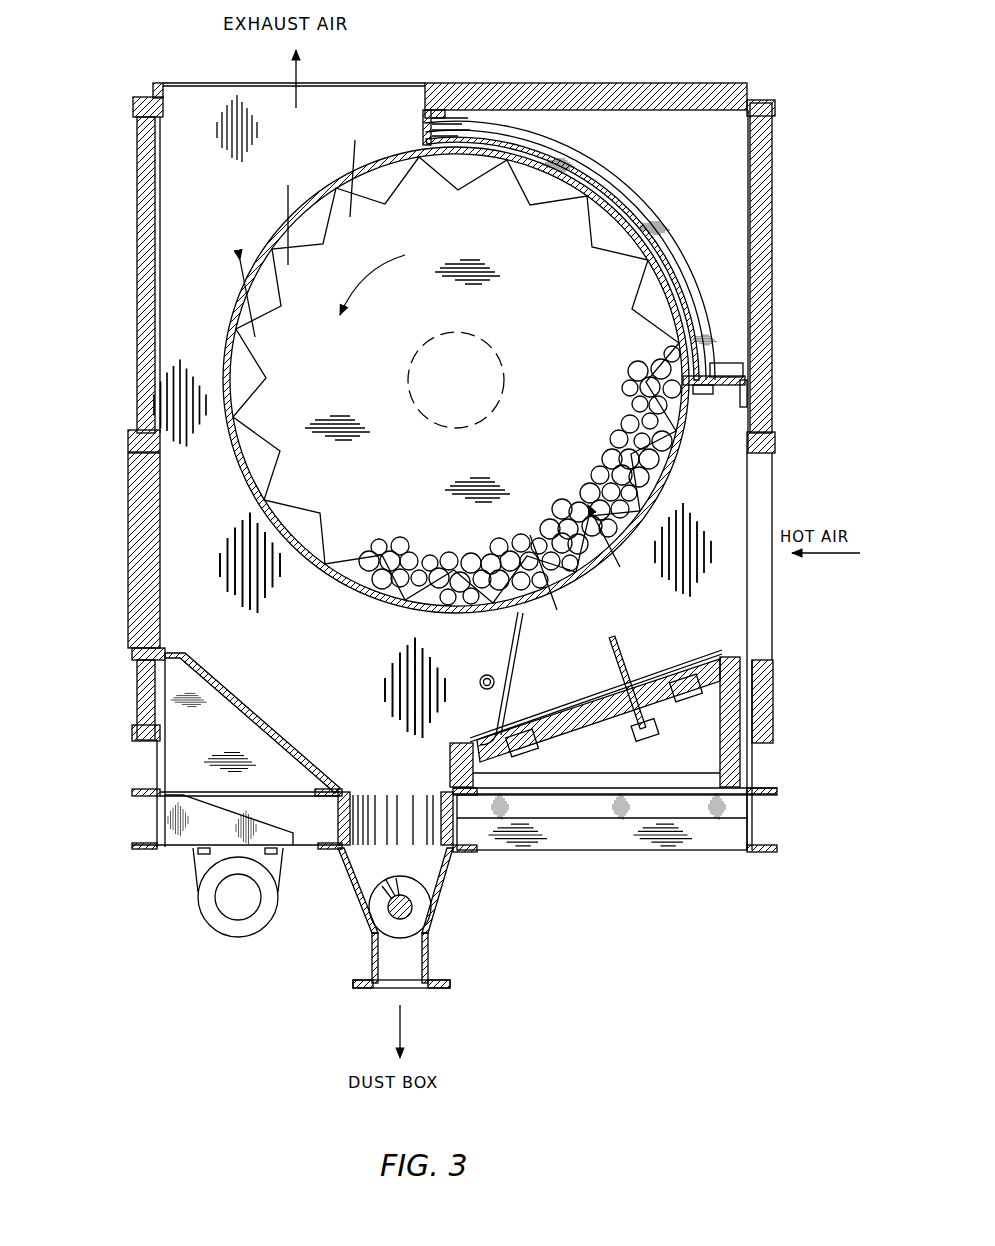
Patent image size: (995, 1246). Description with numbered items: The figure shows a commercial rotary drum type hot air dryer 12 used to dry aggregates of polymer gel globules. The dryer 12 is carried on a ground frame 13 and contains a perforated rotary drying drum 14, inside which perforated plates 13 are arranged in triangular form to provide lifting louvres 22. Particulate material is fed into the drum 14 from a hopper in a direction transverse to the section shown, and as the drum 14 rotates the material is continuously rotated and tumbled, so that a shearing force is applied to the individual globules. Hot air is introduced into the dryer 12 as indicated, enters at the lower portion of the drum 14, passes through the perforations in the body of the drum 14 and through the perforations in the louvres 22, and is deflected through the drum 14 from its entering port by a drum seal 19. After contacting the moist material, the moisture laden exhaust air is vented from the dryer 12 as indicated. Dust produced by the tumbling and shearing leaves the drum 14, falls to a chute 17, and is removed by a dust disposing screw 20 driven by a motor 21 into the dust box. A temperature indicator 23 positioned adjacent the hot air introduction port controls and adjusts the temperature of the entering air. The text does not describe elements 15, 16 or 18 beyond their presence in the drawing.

The dryer 12 is at (180, 177).
The ground frame 13 is at (693, 853).
The rotary drying drum 14 is at (277, 233).
The hot air inlet 15 is at (763, 693).
The housing wall 16 is at (140, 254).
The chute 17 is at (248, 710).
The inclined screen 18 is at (597, 723).
The drum seal 19 is at (502, 707).
The dust disposing screw 20 is at (432, 903).
The motor 21 is at (208, 907).
The lifting louvres 22 is at (483, 172).
The temperature indicator 23 is at (618, 643).